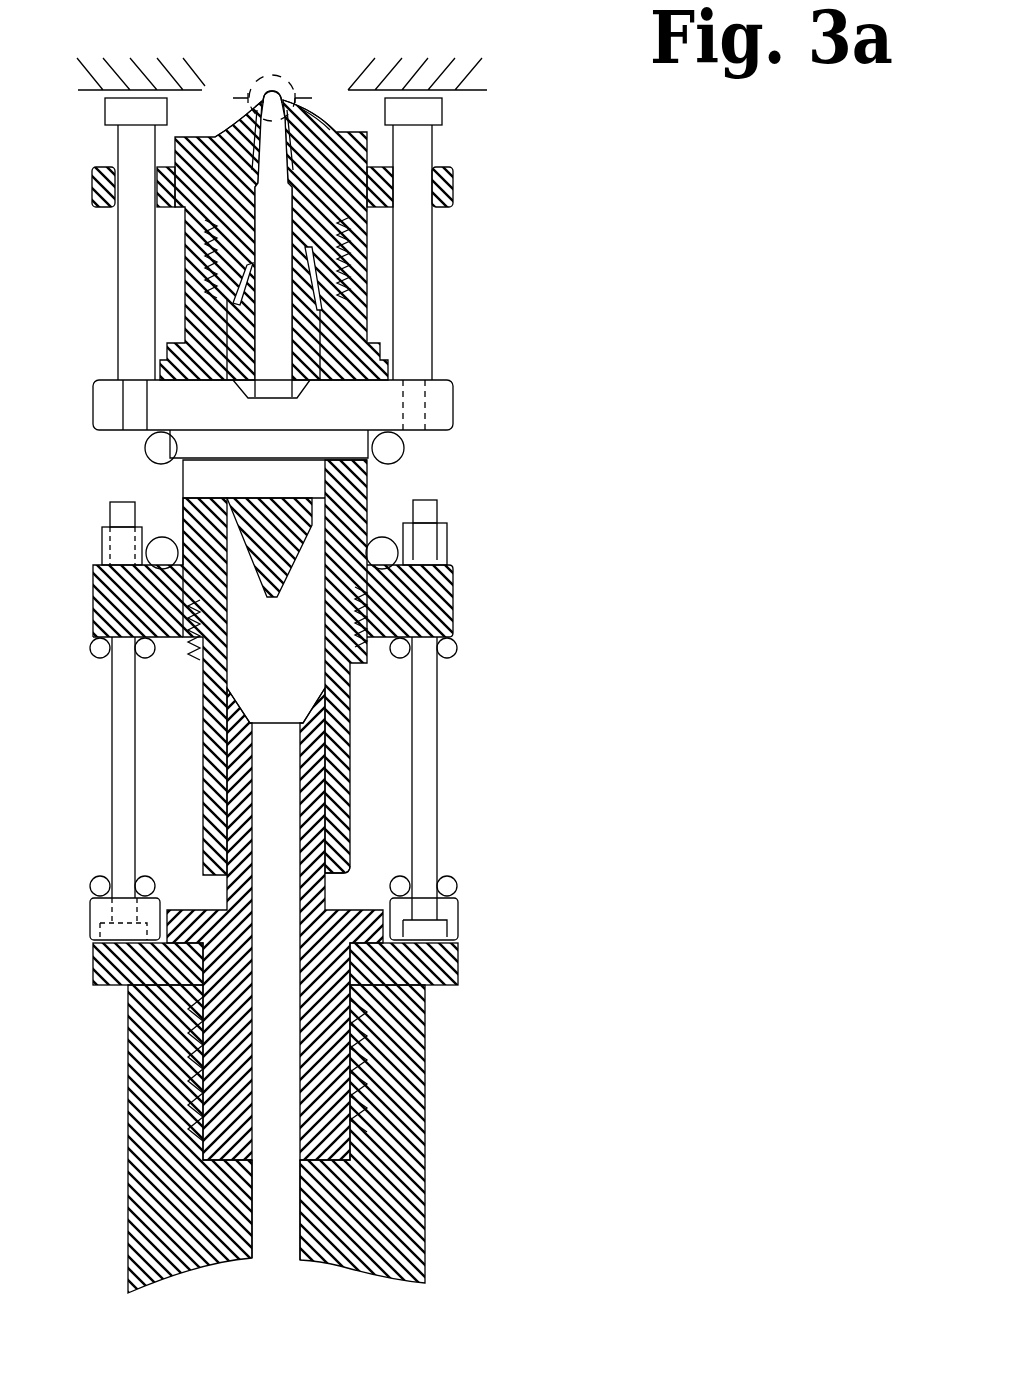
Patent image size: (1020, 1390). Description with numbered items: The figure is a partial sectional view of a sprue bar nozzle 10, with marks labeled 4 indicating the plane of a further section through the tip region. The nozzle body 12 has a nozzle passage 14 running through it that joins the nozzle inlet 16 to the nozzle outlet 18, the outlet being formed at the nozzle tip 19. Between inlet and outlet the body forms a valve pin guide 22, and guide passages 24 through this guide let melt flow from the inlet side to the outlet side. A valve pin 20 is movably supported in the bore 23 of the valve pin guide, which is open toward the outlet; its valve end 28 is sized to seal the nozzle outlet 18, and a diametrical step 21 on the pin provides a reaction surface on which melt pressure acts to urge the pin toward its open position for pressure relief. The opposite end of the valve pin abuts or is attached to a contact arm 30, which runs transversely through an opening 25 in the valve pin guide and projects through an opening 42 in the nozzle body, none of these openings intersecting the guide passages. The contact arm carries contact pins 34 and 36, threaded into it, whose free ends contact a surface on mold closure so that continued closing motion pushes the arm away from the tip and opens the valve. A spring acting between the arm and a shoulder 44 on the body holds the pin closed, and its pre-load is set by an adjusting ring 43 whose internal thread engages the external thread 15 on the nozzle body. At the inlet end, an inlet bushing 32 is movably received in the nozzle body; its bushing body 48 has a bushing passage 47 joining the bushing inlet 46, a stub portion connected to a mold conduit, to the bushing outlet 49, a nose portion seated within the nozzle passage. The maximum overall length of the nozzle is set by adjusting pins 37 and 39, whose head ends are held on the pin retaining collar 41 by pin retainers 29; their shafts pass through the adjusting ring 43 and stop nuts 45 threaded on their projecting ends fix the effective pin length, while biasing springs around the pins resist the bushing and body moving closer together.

The section line 4- 4 is at (271, 98).
The nozzle 10 is at (545, 116).
The nozzle body 12 is at (368, 233).
The nozzle passage 14 is at (393, 128).
The external thread 15 is at (362, 648).
The nozzle inlet 16 is at (328, 878).
The nozzle outlet 18 is at (263, 95).
The nozzle tip 19 is at (323, 124).
The valve pin 20 is at (272, 238).
The step 21 is at (355, 165).
The valve pin guide 22 is at (350, 258).
The bore 23 is at (243, 280).
The guide passage 24 is at (320, 340).
The opening 25 is at (277, 482).
The valve end 28 is at (287, 97).
The pin retainers 29 is at (100, 905).
The contact arm 30 is at (437, 390).
The inlet bushing 32 is at (457, 840).
The contact pin 34 is at (423, 325).
The contact pin 36 is at (127, 317).
The adjusting pin 37 is at (127, 657).
The adjusting pin 39 is at (423, 685).
The pin retaining collar 41 is at (458, 965).
The opening 42 is at (212, 490).
The adjusting ring 43 is at (455, 572).
The shoulder 44 is at (405, 560).
The stop nuts 45 is at (103, 540).
The bushing inlet 46 is at (278, 1150).
The bushing passage 47 is at (273, 1040).
The bushing body 48 is at (330, 740).
The bushing outlet 49 is at (270, 723).